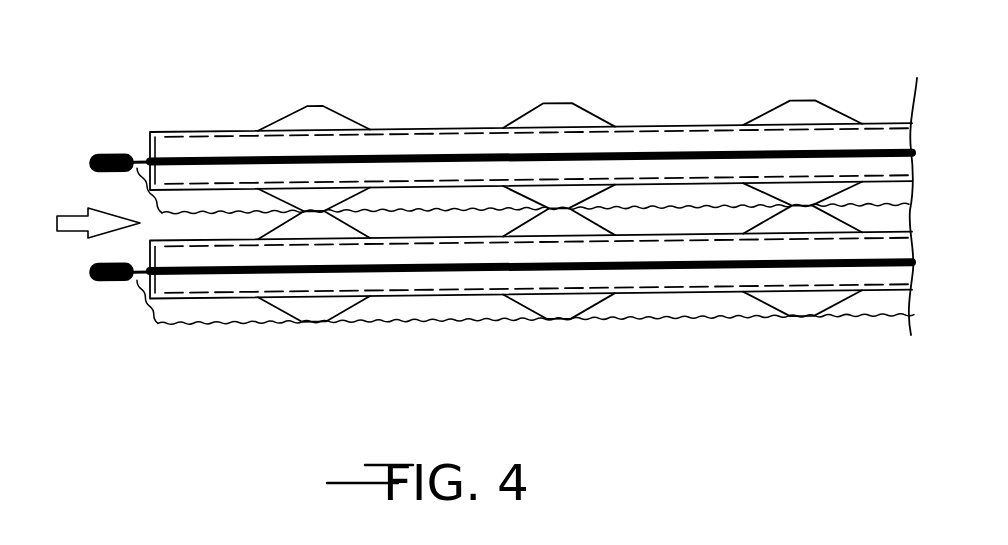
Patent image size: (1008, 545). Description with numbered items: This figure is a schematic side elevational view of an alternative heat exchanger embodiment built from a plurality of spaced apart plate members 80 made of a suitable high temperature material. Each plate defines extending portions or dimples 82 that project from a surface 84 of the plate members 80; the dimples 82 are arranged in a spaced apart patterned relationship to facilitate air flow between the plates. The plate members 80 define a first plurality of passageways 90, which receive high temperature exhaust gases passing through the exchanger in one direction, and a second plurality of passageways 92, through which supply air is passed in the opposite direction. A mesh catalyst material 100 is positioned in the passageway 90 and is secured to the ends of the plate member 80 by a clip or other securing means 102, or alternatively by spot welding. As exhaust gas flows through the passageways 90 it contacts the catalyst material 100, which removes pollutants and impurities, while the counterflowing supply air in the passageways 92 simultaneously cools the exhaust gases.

The plate members 80 is at (174, 122).
The dimples 82 is at (290, 114).
The surface 84 is at (212, 131).
The first plurality of passageways 90 is at (468, 227).
The second plurality of passageways 92 is at (661, 140).
The catalyst material 100 is at (130, 197).
The clip or other securing means 102 is at (93, 158).